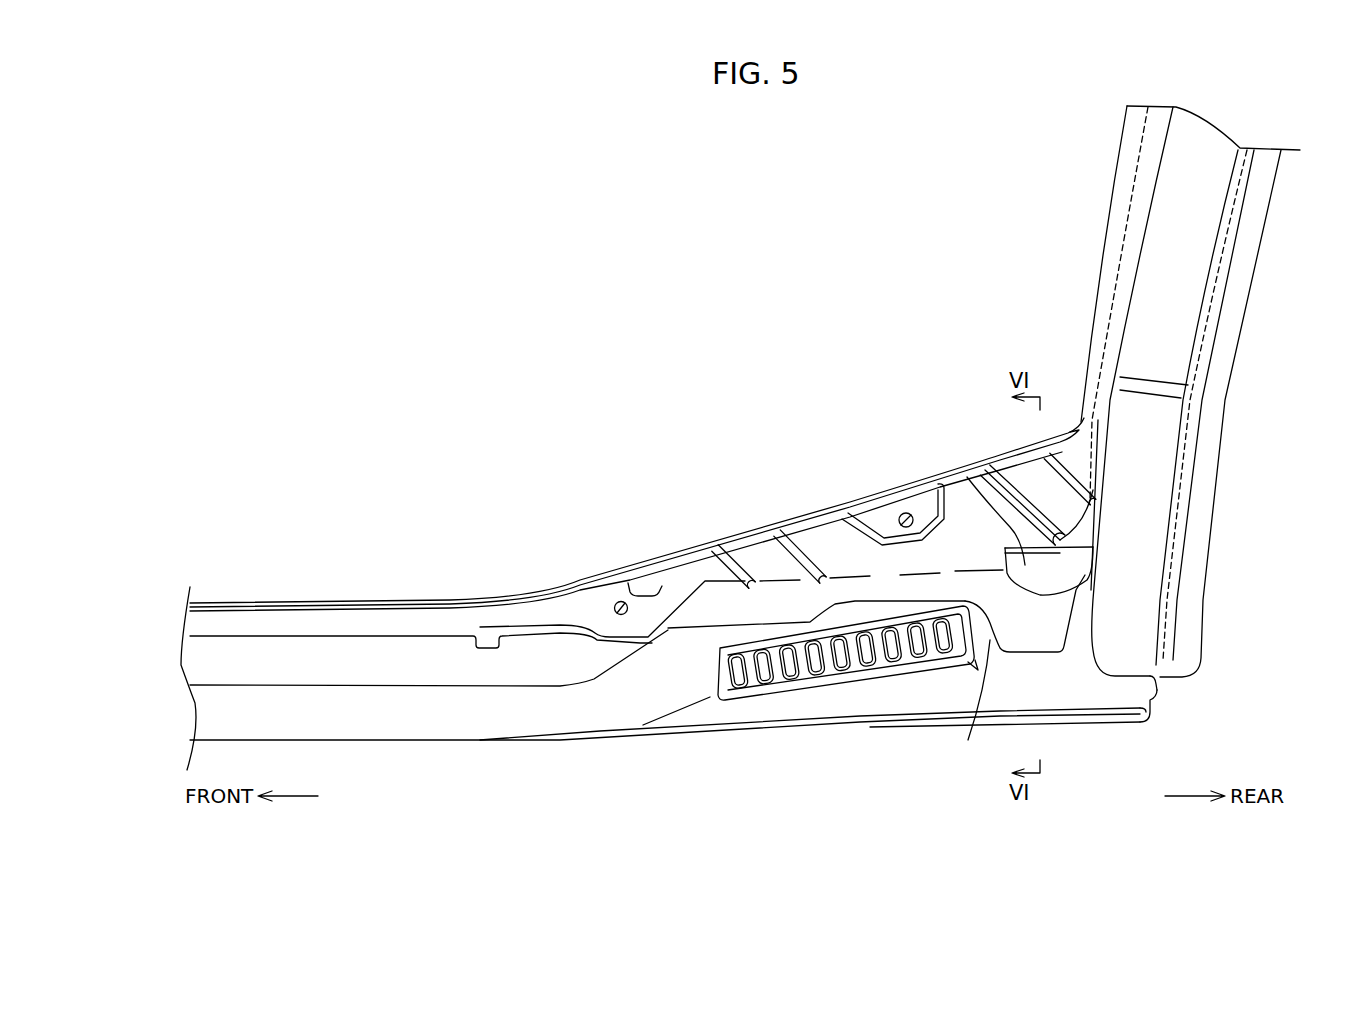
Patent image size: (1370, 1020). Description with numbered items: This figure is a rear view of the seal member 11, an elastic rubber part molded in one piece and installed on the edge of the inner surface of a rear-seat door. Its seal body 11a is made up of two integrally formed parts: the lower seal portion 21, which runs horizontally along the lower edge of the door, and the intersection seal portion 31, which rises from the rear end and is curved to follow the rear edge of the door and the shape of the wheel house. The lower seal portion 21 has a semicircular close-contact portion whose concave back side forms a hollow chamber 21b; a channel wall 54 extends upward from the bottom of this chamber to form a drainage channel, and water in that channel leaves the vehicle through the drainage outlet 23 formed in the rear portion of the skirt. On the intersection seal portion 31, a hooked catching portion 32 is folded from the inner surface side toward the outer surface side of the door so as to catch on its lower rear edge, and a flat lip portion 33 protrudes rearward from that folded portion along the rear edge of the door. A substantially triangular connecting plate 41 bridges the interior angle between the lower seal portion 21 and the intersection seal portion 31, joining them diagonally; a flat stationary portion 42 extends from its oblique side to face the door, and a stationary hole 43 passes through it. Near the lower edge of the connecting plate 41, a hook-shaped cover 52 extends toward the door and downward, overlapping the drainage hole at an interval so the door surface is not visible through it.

The seal member 11 is at (712, 374).
The seal body 11a is at (1213, 672).
The lower seal portion 21 is at (595, 758).
The hollow chamber 21b is at (1052, 632).
The drainage outlet 23 is at (1157, 700).
The intersection seal portion 31 is at (1124, 193).
The hooked catching portion 32 is at (1188, 283).
The lip portion 33 is at (1210, 436).
The connecting plate 41 is at (752, 526).
The stationary portion 42 is at (655, 605).
The stationary hole 43 is at (616, 603).
The cover 52 is at (1022, 565).
The channel wall 54 is at (978, 680).